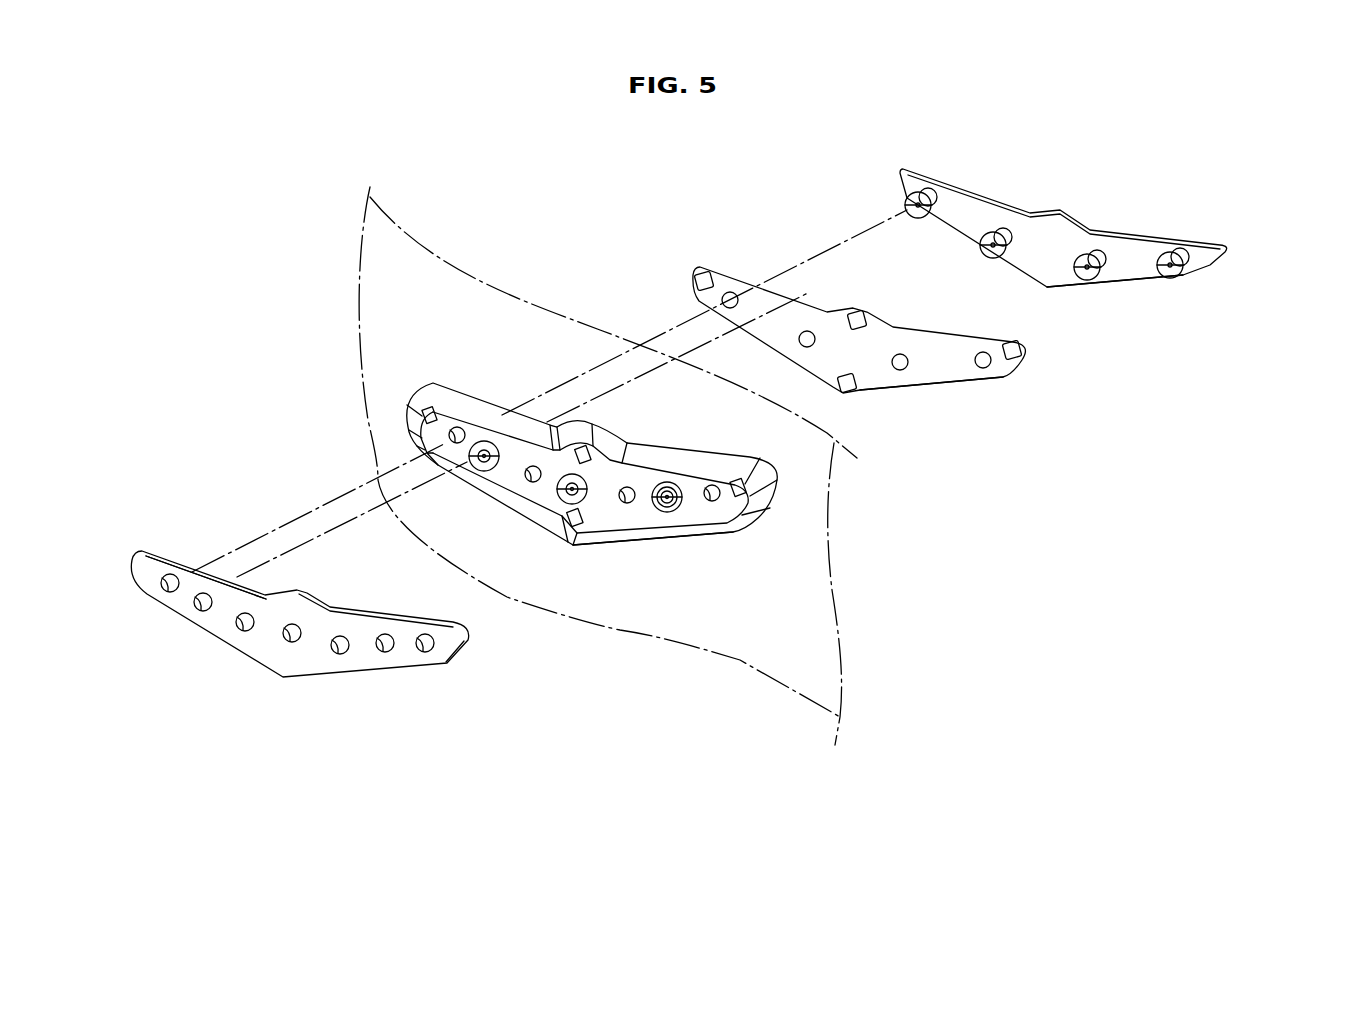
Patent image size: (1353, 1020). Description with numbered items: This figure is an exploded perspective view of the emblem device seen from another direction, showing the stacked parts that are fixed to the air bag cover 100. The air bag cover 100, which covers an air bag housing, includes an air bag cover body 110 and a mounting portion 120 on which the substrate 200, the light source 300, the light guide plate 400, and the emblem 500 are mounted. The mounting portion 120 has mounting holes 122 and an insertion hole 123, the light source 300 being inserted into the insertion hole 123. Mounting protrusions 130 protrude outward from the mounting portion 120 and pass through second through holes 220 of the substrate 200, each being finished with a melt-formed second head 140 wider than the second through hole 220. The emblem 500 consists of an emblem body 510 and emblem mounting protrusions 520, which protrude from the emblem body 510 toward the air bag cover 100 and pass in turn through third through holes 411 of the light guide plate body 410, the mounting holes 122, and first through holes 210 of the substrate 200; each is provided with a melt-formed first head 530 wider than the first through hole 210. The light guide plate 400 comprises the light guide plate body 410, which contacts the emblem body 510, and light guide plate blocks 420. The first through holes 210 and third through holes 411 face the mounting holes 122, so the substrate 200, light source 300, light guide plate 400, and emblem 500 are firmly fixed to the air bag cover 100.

The air bag cover 100 is at (625, 505).
The air bag cover body 110 is at (808, 627).
The mounting portion 120 is at (603, 537).
The mounting holes 122 is at (535, 467).
The insertion hole 123 is at (438, 410).
The mounting protrusions 130 is at (660, 512).
The second head 140 is at (666, 512).
The substrate 200 is at (284, 588).
The first through holes 210 is at (425, 643).
The second through holes 220 is at (385, 643).
The light source 300 is at (160, 553).
The light guide plate 400 is at (894, 387).
The light guide plate body 410 is at (931, 423).
The third through holes 411 is at (898, 373).
The light guide plate blocks 420 is at (1017, 363).
The emblem 500 is at (1101, 252).
The emblem body 510 is at (1147, 252).
The emblem mounting protrusions 520 is at (1102, 250).
The first head 530 is at (1087, 280).